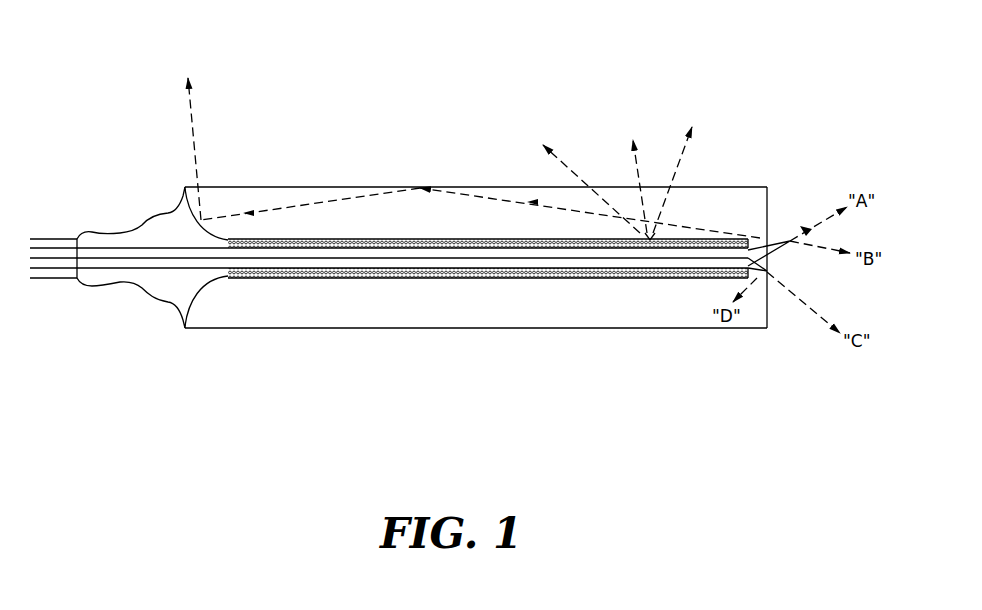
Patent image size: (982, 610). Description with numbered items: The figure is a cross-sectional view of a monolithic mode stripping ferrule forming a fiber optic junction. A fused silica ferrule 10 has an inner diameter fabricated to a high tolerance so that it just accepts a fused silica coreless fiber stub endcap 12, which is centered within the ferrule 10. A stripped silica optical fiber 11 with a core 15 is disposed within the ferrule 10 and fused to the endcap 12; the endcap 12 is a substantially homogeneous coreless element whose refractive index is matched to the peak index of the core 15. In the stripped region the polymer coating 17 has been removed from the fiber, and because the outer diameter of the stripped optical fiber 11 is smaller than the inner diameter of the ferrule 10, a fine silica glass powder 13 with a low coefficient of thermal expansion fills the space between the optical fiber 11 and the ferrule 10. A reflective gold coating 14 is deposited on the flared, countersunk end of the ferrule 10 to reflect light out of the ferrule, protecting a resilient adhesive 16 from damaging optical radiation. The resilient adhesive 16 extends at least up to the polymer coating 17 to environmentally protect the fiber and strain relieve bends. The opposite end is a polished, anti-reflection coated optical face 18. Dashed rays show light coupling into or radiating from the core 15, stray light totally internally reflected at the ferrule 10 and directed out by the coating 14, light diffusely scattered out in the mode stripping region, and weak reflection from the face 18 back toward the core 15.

The fused silica ferrule 10 is at (683, 207).
The stripped silica optical fiber 11 is at (310, 242).
The fused silica coreless fiber stub endcap 12 is at (758, 239).
The silica glass powder 13 is at (445, 237).
The reflective gold coating 14 is at (201, 220).
The core 15 is at (691, 262).
The resilient adhesive 16 is at (162, 286).
The polymer coating 17 is at (53, 280).
The optical face 18 is at (770, 327).